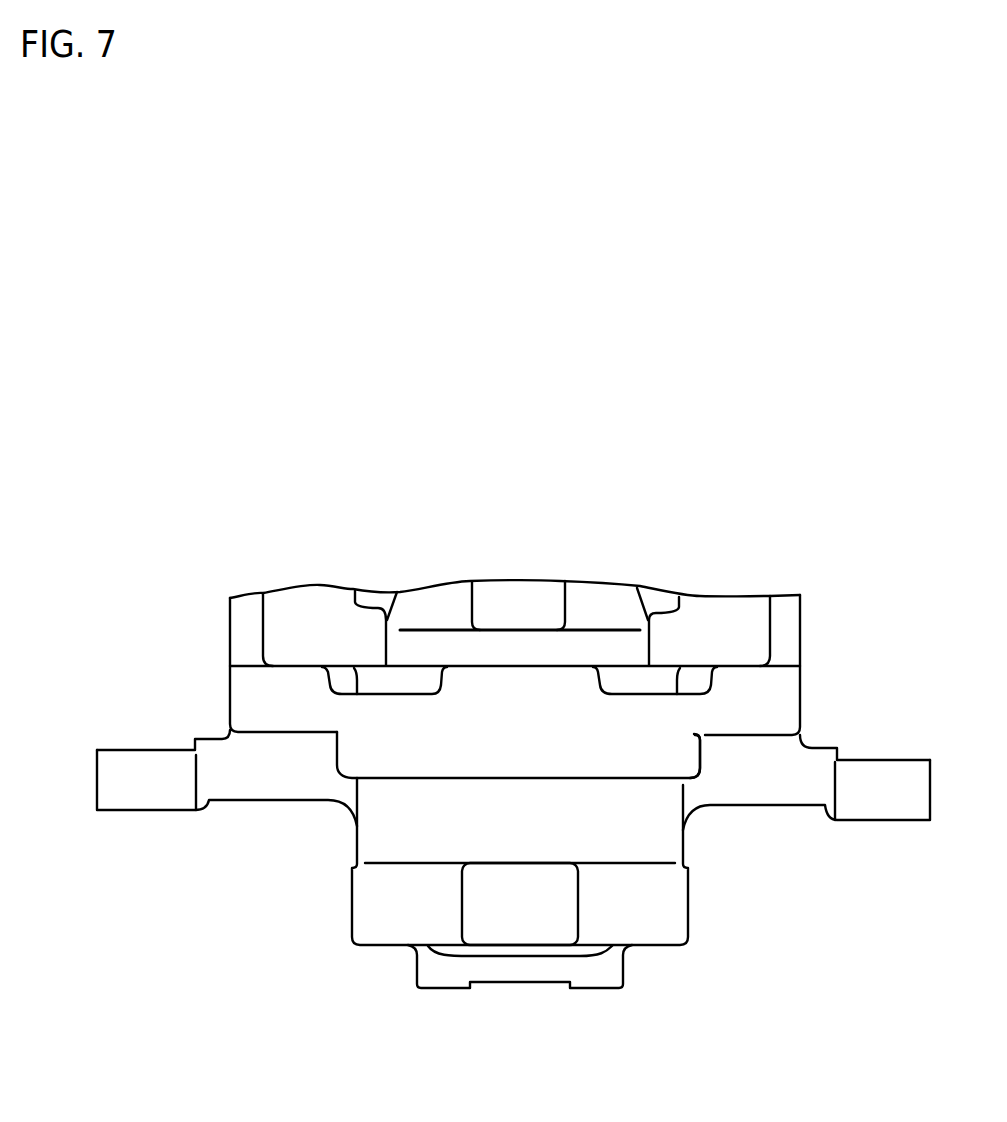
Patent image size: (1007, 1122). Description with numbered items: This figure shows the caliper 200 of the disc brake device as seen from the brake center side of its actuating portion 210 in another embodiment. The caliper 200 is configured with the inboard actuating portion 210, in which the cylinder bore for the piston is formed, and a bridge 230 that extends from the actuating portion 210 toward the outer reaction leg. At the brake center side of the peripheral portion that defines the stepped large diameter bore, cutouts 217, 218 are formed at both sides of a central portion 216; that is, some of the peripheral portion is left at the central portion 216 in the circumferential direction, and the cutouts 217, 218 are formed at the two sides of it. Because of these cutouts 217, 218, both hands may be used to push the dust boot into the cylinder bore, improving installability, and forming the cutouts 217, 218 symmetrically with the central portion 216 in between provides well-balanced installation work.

The caliper 200 is at (210, 615).
The actuating portion 210 is at (334, 904).
The central portion 216 is at (503, 682).
The cutout 217 is at (411, 680).
The cutout 218 is at (617, 680).
The bridge 230 is at (802, 627).